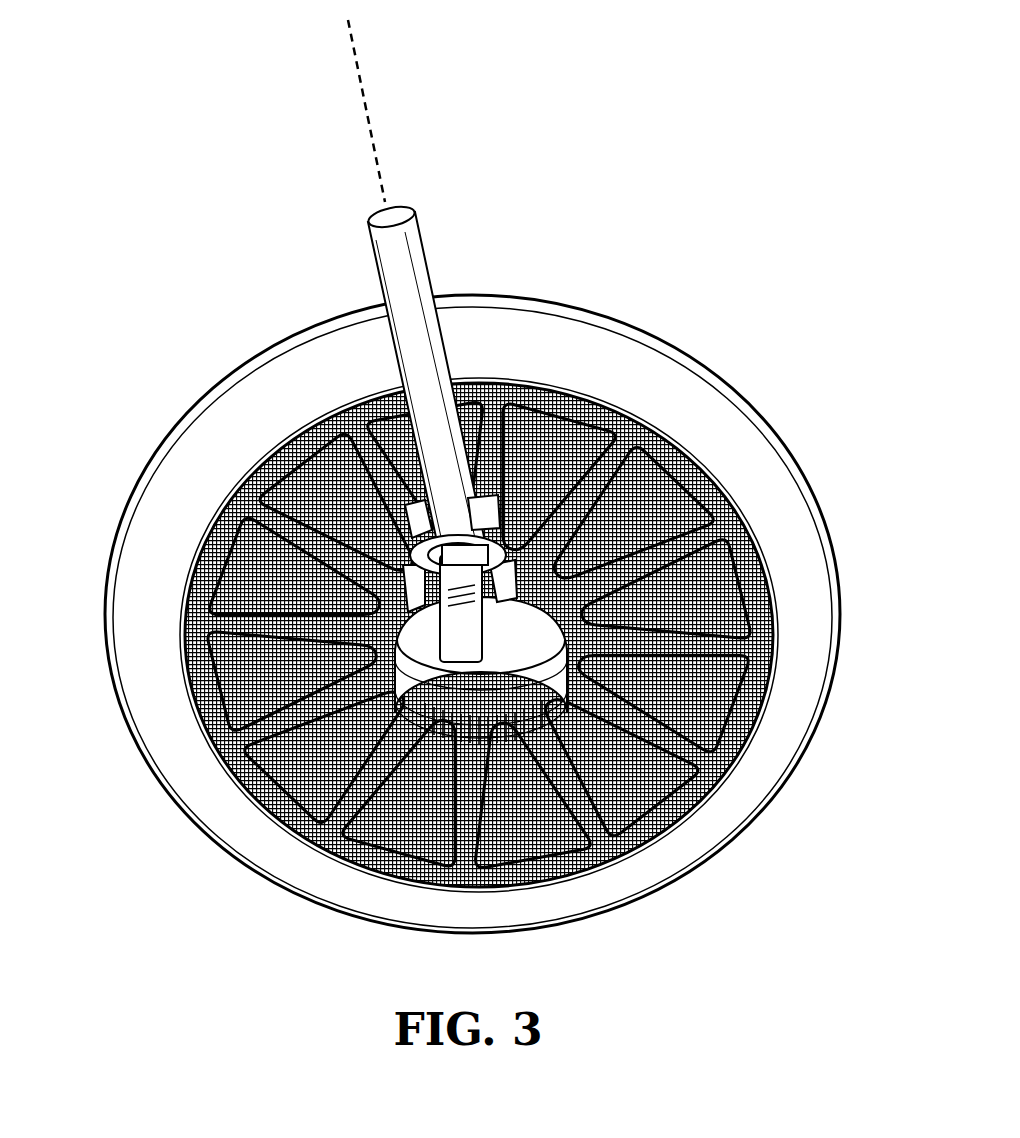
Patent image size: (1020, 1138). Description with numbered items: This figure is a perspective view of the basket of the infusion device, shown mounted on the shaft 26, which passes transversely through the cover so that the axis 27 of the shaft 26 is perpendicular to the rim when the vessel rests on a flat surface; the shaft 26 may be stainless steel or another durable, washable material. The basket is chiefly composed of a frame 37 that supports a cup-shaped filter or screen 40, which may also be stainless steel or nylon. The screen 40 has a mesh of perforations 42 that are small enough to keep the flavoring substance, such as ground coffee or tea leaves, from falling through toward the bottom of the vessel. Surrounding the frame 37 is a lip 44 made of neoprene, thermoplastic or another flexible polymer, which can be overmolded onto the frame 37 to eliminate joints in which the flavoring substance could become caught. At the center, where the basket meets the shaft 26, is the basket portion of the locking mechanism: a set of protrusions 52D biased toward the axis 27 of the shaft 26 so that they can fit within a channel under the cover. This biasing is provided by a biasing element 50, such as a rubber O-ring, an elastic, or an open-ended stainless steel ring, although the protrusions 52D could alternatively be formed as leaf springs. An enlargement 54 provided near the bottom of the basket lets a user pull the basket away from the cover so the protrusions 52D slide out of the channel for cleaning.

The shaft 26 is at (400, 252).
The axis 27 is at (372, 118).
The frame 37 is at (700, 680).
The screen 40 is at (645, 412).
The perforations 42 is at (657, 473).
The lip 44 is at (787, 517).
The biasing element 50 is at (420, 557).
The protrusions 52D is at (487, 512).
The enlargement 54 is at (548, 795).